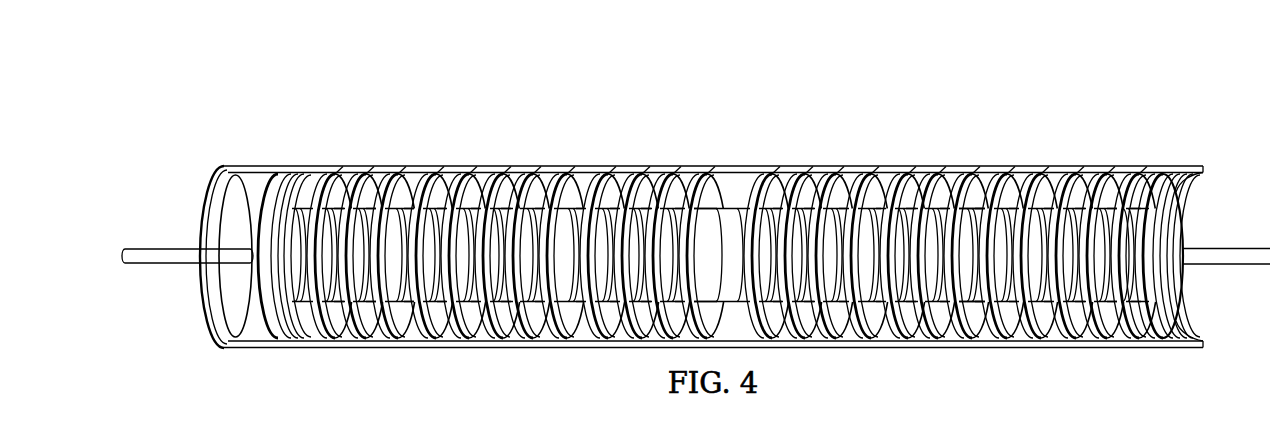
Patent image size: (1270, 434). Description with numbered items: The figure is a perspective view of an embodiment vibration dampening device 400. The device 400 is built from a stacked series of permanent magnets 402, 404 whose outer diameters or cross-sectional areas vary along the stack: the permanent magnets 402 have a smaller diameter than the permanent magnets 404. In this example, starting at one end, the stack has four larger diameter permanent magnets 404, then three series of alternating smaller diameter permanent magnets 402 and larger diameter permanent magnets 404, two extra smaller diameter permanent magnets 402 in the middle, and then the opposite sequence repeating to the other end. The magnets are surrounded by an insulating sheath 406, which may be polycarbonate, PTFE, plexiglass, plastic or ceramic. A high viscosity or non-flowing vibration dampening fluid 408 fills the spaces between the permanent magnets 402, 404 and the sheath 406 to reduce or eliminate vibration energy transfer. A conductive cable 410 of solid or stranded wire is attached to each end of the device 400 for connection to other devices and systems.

The vibration dampening device 400 is at (684, 99).
The permanent magnets 402 is at (420, 184).
The permanent magnets 404 is at (674, 176).
The insulating sheath 406 is at (975, 182).
The vibration dampening fluid 408 is at (712, 180).
The conductive cable 410 is at (1247, 255).